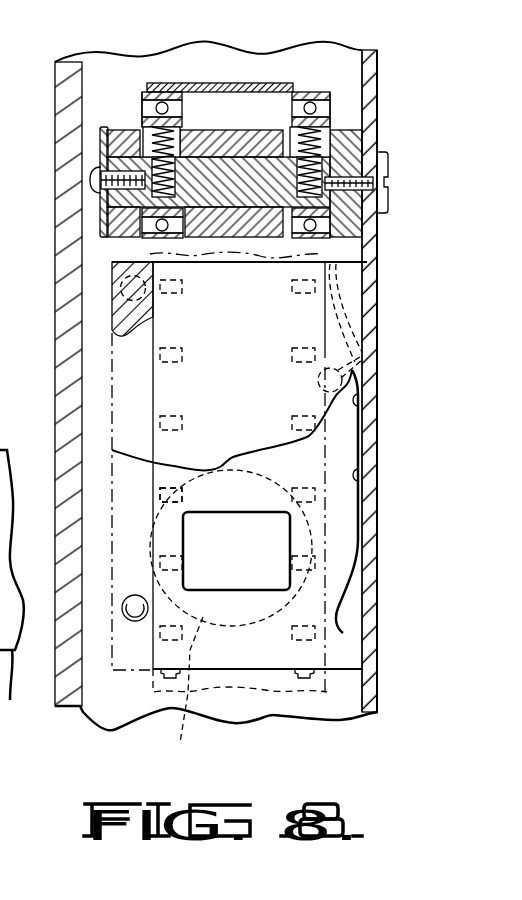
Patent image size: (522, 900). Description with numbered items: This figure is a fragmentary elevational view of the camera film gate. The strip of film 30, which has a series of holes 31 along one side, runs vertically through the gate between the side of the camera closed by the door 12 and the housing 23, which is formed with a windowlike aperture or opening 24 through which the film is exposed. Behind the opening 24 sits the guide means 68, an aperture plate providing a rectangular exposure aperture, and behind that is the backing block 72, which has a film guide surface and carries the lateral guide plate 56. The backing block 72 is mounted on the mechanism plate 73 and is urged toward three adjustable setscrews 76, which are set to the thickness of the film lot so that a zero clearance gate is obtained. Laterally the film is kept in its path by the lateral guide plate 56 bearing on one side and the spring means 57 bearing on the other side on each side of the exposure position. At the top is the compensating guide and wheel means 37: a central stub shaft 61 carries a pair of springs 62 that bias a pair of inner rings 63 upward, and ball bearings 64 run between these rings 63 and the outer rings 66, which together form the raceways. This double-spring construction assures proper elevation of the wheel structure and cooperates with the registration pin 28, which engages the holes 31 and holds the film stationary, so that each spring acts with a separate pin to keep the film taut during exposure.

The door 12 is at (55, 230).
The housing 23 is at (348, 707).
The aperture or opening 24 is at (176, 693).
The registration pin 28 is at (304, 680).
The strip of film 30 is at (215, 83).
The holes 31 is at (160, 496).
The compensating guide and wheel means 37 is at (352, 44).
The lateral guide plate 56 is at (112, 290).
The spring means 57 is at (350, 566).
The central stub shaft 61 is at (372, 140).
The springs 62 is at (145, 140).
The rings 63 is at (183, 112).
The ball bearings 64 is at (162, 105).
The outer rings 66 is at (147, 87).
The guide means (aperture plate) 68 is at (252, 627).
The backing block 72 is at (150, 385).
The mechanism plate 73 is at (373, 307).
The adjustable setscrews 76 is at (154, 312).